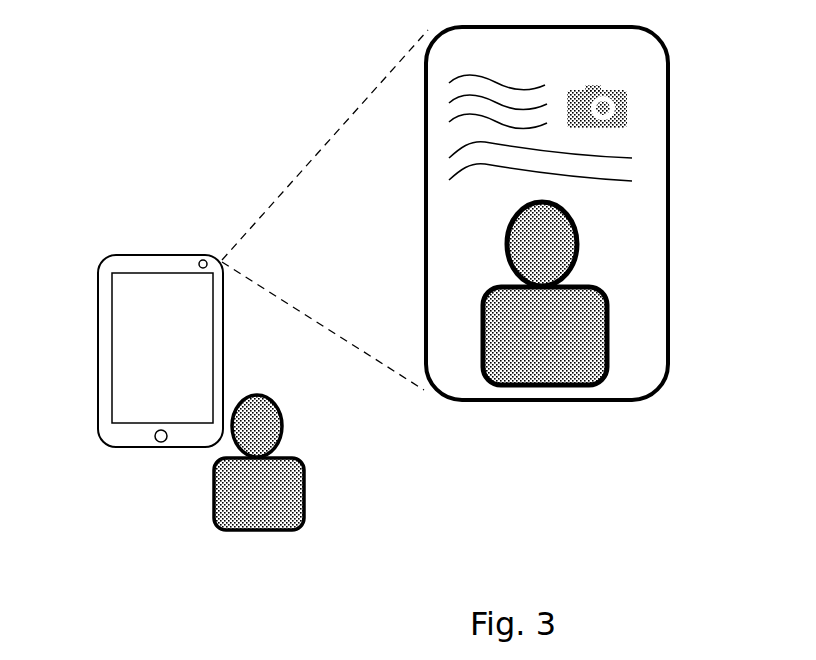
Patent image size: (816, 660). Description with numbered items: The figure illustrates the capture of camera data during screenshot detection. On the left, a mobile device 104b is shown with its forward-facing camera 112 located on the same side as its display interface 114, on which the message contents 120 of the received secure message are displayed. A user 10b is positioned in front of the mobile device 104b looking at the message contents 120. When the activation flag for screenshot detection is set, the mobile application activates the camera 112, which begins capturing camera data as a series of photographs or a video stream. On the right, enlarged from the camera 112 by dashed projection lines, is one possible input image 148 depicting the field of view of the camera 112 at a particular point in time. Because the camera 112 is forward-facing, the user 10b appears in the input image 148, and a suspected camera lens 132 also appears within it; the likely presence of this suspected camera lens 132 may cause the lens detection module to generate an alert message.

The user 10b is at (270, 507).
The mobile device 104b is at (133, 455).
The camera 112 is at (203, 259).
The display interface 114 is at (161, 308).
The message contents 120 is at (138, 366).
The suspected camera lens 132 is at (616, 88).
The input image 148 is at (670, 221).